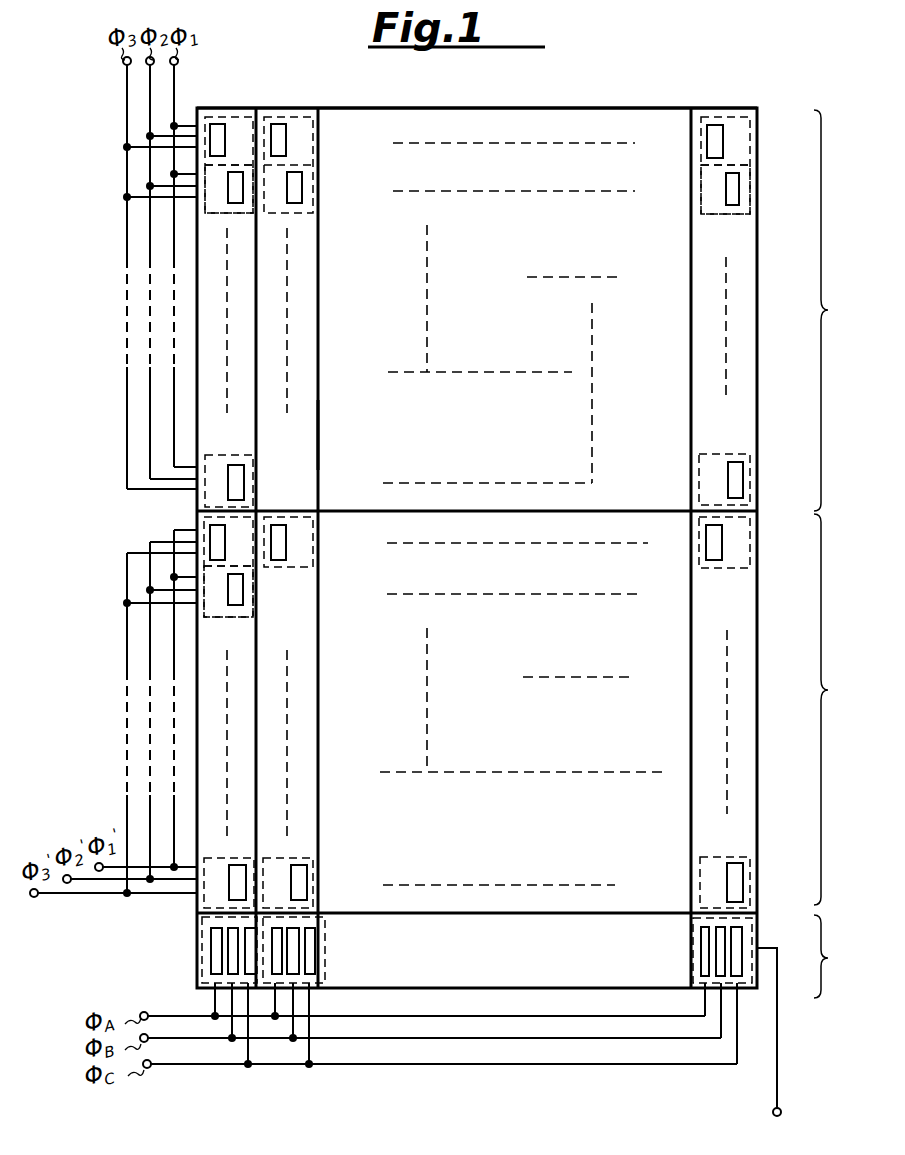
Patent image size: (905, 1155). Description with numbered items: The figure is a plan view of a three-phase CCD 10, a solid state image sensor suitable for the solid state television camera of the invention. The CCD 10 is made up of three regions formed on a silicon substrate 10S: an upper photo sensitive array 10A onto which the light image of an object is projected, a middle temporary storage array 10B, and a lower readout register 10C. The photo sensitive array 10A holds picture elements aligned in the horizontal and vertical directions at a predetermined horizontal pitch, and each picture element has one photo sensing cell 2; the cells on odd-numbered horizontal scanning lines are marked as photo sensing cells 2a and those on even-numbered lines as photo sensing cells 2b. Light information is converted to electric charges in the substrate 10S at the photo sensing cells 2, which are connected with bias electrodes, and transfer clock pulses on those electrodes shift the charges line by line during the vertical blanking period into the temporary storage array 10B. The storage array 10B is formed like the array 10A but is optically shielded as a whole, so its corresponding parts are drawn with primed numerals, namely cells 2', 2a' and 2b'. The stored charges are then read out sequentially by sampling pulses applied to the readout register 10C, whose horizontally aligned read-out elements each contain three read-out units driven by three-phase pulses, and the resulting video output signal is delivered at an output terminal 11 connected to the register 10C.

The 3-phase CCD 10 is at (524, 104).
The silicon substrate 10S is at (620, 122).
The photo sensitive array 10A is at (847, 310).
The temporary storage array 10B is at (847, 709).
The readout register 10C is at (847, 956).
The output terminal 11 is at (782, 1112).
The photo sensing cell 2 is at (490, 140).
The photo sensing cell on odd horizontal scanning lines 2a is at (687, 150).
The photo sensing cell on even horizontal scanning lines 2b is at (508, 343).
The cell of temporary storage array 2' is at (476, 713).
The cell of temporary storage array on odd lines 2a' is at (685, 558).
The cell of temporary storage array on even lines 2b' is at (266, 597).